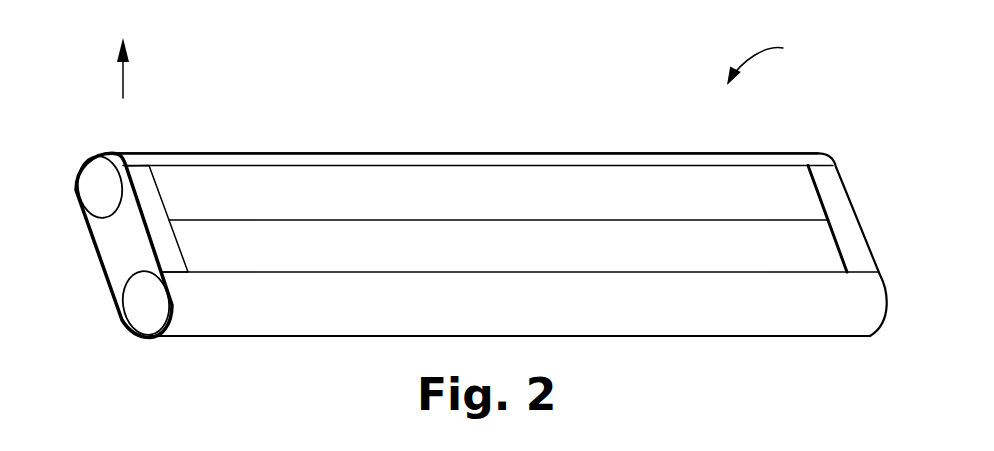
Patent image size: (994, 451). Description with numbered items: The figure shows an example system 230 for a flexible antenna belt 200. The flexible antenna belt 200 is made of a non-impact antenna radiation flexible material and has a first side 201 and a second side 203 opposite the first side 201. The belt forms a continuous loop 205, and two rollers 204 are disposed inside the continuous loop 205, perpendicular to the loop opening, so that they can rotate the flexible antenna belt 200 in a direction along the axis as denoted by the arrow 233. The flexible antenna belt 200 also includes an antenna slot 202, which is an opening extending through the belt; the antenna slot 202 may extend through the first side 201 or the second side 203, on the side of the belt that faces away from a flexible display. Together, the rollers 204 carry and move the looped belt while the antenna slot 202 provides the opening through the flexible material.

The flexible antenna belt 200 is at (597, 154).
The first side 201 is at (383, 155).
The antenna slot 202 is at (512, 243).
The second side 203 is at (109, 284).
The rollers 204 is at (93, 202).
The continuous loop 205 is at (125, 240).
The system 230 is at (772, 64).
The arrow 233 is at (125, 56).